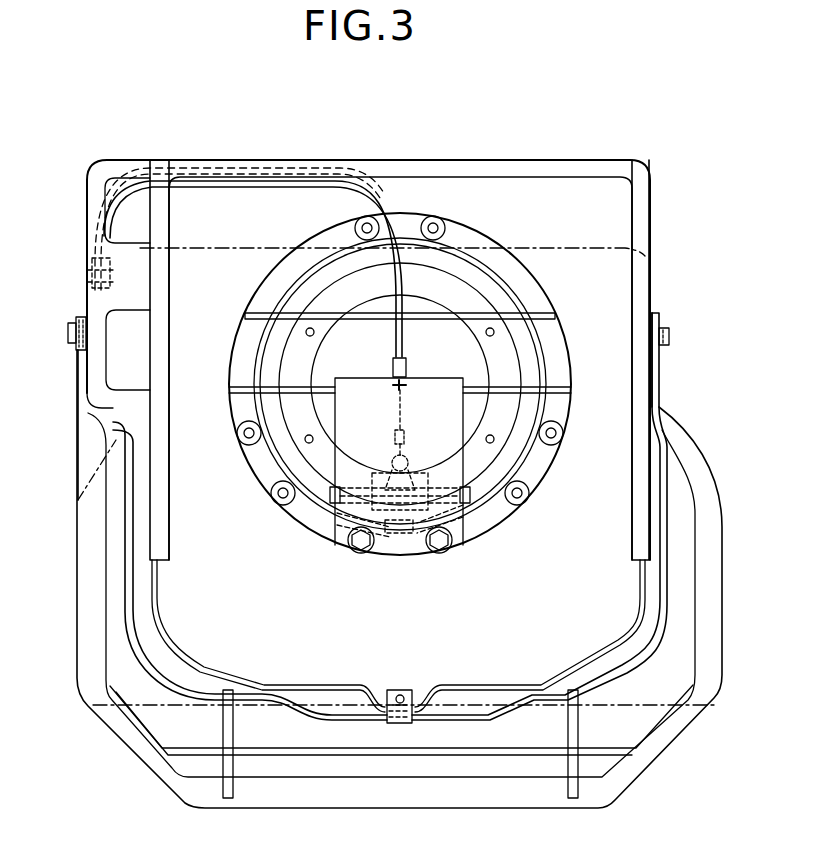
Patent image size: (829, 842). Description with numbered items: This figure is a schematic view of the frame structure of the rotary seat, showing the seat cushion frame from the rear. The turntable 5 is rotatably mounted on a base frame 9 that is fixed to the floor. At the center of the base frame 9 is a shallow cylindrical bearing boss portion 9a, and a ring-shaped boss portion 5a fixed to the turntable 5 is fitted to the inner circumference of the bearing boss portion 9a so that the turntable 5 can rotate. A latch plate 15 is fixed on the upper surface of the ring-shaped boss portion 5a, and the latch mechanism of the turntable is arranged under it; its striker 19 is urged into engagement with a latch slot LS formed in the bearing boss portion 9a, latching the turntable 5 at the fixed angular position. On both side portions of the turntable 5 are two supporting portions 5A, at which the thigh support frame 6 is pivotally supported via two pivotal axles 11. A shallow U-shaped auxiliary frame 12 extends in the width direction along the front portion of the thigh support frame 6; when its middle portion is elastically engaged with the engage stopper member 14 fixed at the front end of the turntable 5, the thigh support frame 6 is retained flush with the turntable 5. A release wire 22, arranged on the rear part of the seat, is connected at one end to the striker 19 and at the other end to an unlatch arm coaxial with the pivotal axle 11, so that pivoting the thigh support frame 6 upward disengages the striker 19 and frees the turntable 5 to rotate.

The turntable 5 is at (618, 408).
The supporting portions 5A is at (85, 387).
The ring-shaped boss portion 5a is at (561, 352).
The thigh support frame 6 is at (716, 580).
The base frame 9 is at (657, 283).
The bearing boss portion 9a is at (522, 338).
The pivotal axles 11 is at (72, 330).
The auxiliary frame 12 is at (667, 647).
The engage stopper member 14 is at (410, 690).
The latch plate 15 is at (455, 460).
The striker 19 is at (335, 520).
The release wire 22 is at (360, 185).
The latch slot LS is at (402, 231).